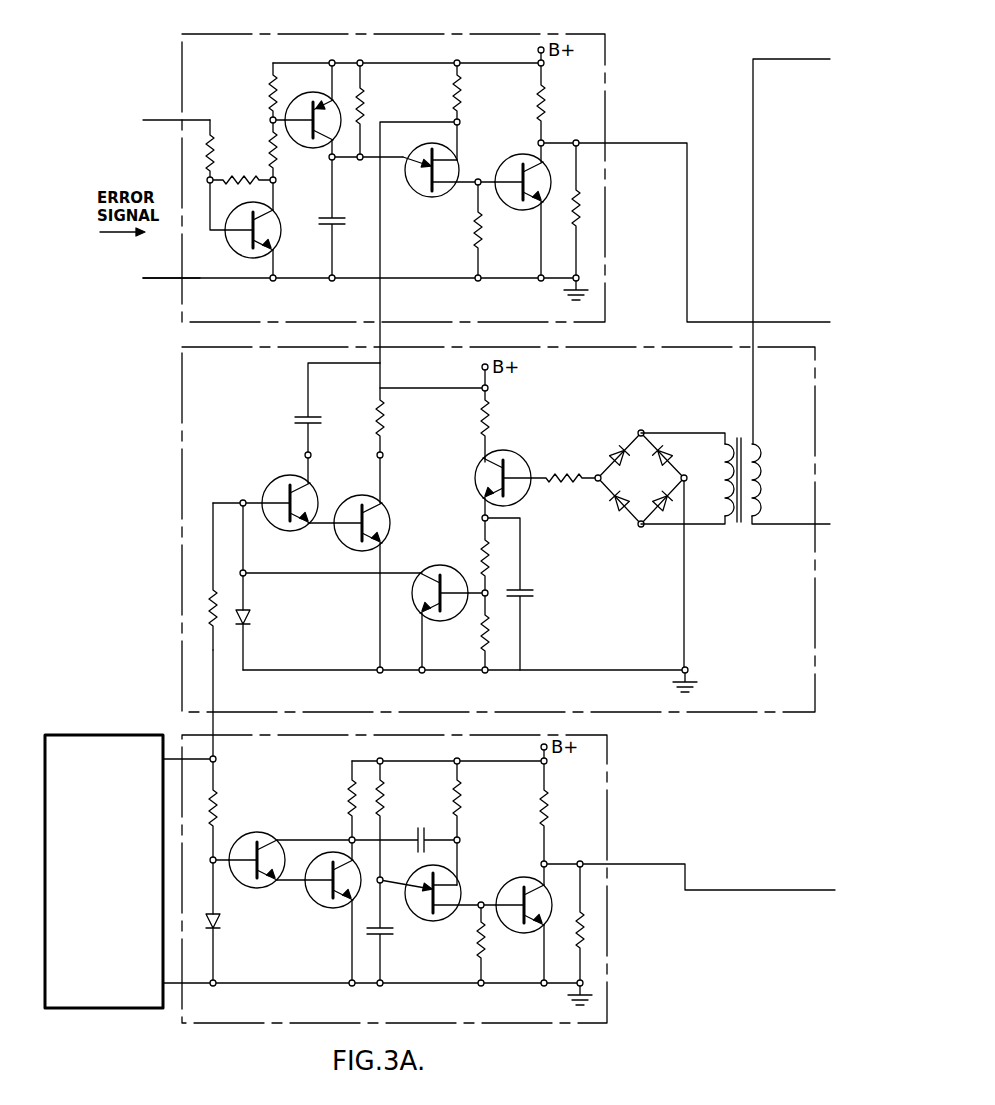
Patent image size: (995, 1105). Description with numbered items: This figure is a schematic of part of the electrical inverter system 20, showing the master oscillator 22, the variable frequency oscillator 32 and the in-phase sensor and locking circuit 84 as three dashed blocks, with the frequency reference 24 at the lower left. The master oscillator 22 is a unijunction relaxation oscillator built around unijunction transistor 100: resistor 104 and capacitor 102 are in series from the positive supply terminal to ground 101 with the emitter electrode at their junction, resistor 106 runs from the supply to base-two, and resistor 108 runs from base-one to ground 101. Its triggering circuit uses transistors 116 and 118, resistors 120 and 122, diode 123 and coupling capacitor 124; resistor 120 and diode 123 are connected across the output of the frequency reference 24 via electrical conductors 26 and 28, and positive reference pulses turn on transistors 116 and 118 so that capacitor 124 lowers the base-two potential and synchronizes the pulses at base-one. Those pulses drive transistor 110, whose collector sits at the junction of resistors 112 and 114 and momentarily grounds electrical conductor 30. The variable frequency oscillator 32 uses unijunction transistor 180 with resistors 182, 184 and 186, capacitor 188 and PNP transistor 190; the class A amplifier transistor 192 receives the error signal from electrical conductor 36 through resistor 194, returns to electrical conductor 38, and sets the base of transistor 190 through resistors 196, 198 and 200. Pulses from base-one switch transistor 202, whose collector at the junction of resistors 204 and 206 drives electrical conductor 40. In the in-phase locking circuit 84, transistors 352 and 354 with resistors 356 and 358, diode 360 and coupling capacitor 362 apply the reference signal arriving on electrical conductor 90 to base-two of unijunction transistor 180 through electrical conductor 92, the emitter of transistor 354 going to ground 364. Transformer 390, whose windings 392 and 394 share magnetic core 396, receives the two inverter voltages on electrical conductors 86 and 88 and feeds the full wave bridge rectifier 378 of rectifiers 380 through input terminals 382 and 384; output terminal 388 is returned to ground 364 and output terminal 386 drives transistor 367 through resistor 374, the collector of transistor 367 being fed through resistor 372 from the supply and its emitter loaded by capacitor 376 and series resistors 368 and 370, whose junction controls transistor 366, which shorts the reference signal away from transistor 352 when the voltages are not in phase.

The electrical inverter system 20 is at (692, 1031).
The master oscillator 22 is at (257, 735).
The frequency reference 24 is at (100, 734).
The electrical conductor 26 is at (178, 759).
The electrical conductor 28 is at (176, 995).
The electrical conductor 30 is at (822, 890).
The variable frequency oscillator 32 is at (228, 33).
The electrical conductor 36 is at (170, 120).
The electrical conductor 38 is at (158, 283).
The electrical conductor 40 is at (820, 322).
The in-phase sensor and locking circuit 84 is at (232, 347).
The electrical conductor 86 is at (820, 59).
The electrical conductor 88 is at (806, 530).
The electrical conductor 90 is at (216, 698).
The electrical conductor 92 is at (378, 300).
The unijunction transistor 100 is at (452, 922).
The ground 101 is at (566, 1006).
The capacitor 102 is at (380, 931).
The resistor 104 is at (386, 800).
The resistor 106 is at (464, 800).
The resistor 108 is at (474, 958).
The transistor 110 is at (540, 880).
The resistor 112 is at (550, 812).
The resistor 114 is at (574, 938).
The transistor 116 is at (234, 834).
The transistor 118 is at (338, 906).
The resistor 120 is at (220, 808).
The resistor 122 is at (344, 798).
The diode 123 is at (224, 920).
The coupling capacitor 124 is at (418, 832).
The unijunction transistor 180 is at (428, 198).
The resistor 182 is at (364, 102).
The resistor 184 is at (450, 92).
The resistor 186 is at (472, 240).
The capacitor 188 is at (347, 222).
The transistor 190 is at (326, 96).
The transistor 192 is at (240, 258).
The resistor 194 is at (212, 133).
The resistor 196 is at (252, 174).
The resistor 198 is at (270, 148).
The resistor 200 is at (268, 84).
The transistor 202 is at (510, 150).
The resistor 204 is at (536, 92).
The resistor 206 is at (572, 215).
The transistor 352 is at (282, 482).
The transistor 354 is at (388, 514).
The resistor 356 is at (230, 600).
The resistor 358 is at (374, 414).
The diode 360 is at (256, 620).
The coupling capacitor 362 is at (292, 422).
The ground 364 is at (698, 690).
The transistor 366 is at (428, 568).
The transistor 367 is at (498, 452).
The resistor 368 is at (480, 556).
The resistor 370 is at (480, 642).
The resistor 372 is at (478, 416).
The resistor 374 is at (578, 486).
The capacitor 376 is at (536, 598).
The full wave bridge rectifier 378 is at (659, 484).
The rectifiers 380 is at (610, 452).
The input terminal 382 is at (644, 418).
The input terminal 384 is at (636, 528).
The output terminal 386 is at (596, 474).
The output terminal 388 is at (670, 448).
The transformer 390 is at (743, 431).
The winding 392 is at (776, 488).
The winding 394 is at (720, 498).
The magnetic core 396 is at (738, 524).